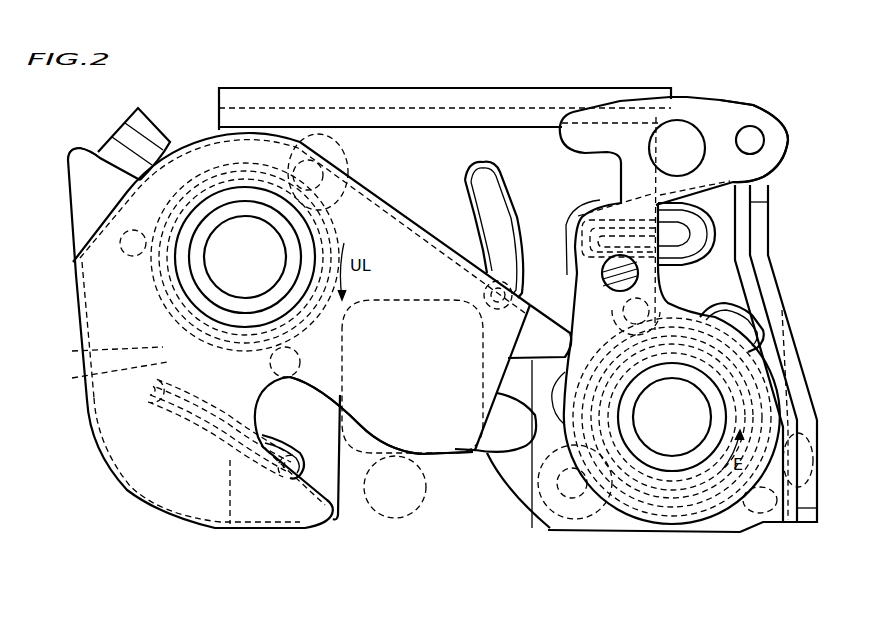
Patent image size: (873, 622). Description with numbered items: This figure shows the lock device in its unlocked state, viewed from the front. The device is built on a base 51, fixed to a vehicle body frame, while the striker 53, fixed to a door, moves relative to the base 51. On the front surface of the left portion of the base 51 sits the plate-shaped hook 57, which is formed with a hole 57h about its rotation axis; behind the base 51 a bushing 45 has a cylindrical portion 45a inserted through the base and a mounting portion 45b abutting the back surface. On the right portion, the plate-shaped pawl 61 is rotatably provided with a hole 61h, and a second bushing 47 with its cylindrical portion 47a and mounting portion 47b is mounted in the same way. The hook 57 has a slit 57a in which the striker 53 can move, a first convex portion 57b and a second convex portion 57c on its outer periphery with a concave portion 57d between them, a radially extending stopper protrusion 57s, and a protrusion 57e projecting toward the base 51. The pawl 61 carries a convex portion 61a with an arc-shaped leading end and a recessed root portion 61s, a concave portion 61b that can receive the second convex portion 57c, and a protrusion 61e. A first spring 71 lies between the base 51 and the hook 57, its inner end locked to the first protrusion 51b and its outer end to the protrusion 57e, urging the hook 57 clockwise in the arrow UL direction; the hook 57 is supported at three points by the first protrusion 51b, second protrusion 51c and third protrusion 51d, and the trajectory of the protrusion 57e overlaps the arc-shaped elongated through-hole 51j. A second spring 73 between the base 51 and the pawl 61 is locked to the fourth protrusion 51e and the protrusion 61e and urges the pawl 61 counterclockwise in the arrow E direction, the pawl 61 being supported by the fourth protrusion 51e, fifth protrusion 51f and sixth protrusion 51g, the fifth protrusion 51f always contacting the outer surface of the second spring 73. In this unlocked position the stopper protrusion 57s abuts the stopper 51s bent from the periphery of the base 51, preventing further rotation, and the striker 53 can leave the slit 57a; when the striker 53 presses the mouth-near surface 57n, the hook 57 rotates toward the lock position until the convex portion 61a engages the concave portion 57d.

The bushing 45 is at (445, 122).
The cylindrical portion 45a is at (281, 223).
The mounting portion 45b is at (298, 137).
The bushing 47 is at (793, 353).
The cylindrical portion 47a is at (740, 335).
The mounting portion 47b is at (755, 320).
The base 51 is at (410, 143).
The first protrusion 51b is at (82, 323).
The second protrusion 51c is at (228, 524).
The third protrusion 51d is at (490, 180).
The fourth protrusion 51e is at (697, 532).
The fifth protrusion 51f is at (727, 320).
The sixth protrusion 51g is at (688, 215).
The arc-shaped elongated through-hole 51j is at (102, 350).
The stopper 51s is at (141, 118).
The striker 53 is at (428, 503).
The hook 57 is at (278, 512).
The slit 57a is at (336, 512).
The first convex portion 57b is at (550, 360).
The second convex portion 57c is at (520, 525).
The concave portion 57d is at (537, 360).
The protrusion 57e is at (105, 375).
The hole 57h is at (244, 205).
The mouth-near surface 57n is at (355, 427).
The stopper protrusion 57s is at (76, 146).
The pawl 61 is at (717, 400).
The convex portion 61a is at (572, 143).
The concave portion 61b is at (623, 213).
The protrusion 61e is at (672, 172).
The hole 61h is at (632, 470).
The recessed root portion 61s is at (603, 145).
The first spring 71 is at (202, 170).
The second spring 73 is at (683, 530).